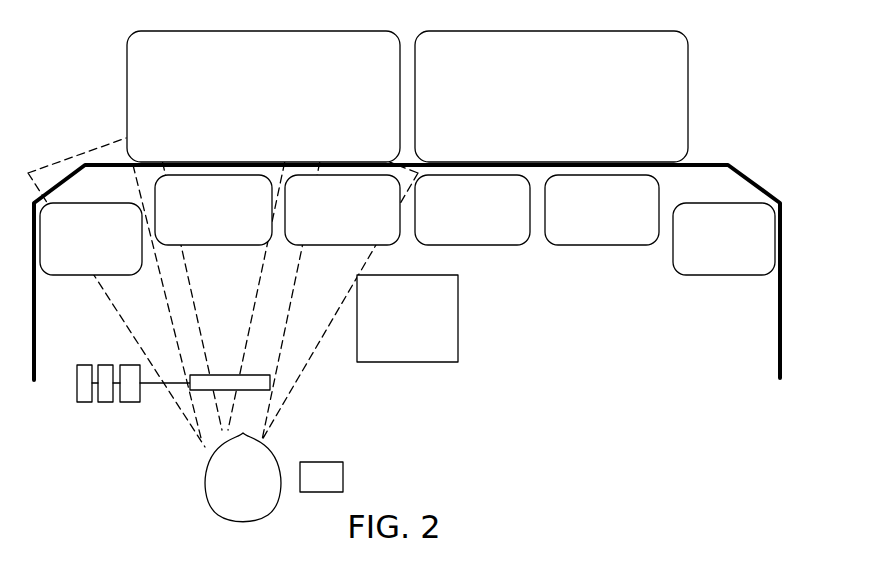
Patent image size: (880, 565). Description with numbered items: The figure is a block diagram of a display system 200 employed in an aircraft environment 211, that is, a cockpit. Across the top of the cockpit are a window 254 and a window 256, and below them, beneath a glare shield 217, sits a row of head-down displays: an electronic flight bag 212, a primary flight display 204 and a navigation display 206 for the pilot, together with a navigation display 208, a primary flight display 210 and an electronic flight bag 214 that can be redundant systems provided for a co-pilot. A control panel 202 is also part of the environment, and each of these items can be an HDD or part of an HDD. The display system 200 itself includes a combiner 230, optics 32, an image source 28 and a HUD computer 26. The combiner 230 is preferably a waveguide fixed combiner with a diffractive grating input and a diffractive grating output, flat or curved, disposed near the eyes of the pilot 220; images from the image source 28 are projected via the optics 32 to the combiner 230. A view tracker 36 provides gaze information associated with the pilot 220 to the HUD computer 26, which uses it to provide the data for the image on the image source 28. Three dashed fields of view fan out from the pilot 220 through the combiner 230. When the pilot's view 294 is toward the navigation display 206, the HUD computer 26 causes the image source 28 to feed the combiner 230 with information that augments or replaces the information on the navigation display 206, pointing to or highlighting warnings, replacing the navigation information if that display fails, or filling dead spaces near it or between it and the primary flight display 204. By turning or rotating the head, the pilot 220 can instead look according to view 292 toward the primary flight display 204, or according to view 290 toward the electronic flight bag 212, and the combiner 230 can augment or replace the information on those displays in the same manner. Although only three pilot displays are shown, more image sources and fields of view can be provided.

The HUD computer 26 is at (77, 380).
The image source 28 is at (104, 402).
The optics 32 is at (131, 402).
The view tracker 36 is at (343, 467).
The display system 200 is at (662, 379).
The control panel 202 is at (458, 350).
The primary flight display 204 is at (215, 245).
The navigation display 206 is at (335, 245).
The navigation display 208 is at (510, 245).
The primary flight display 210 is at (640, 245).
The aircraft environment 211 is at (488, 437).
The electronic flight bag 212 is at (63, 275).
The electronic flight bag 214 is at (746, 275).
The glare shield 217 is at (728, 165).
The pilot 220 is at (224, 518).
The combiner 230 is at (258, 390).
The window 254 is at (127, 61).
The window 256 is at (690, 58).
The view 290 is at (91, 150).
The view 292 is at (228, 137).
The view 294 is at (344, 142).